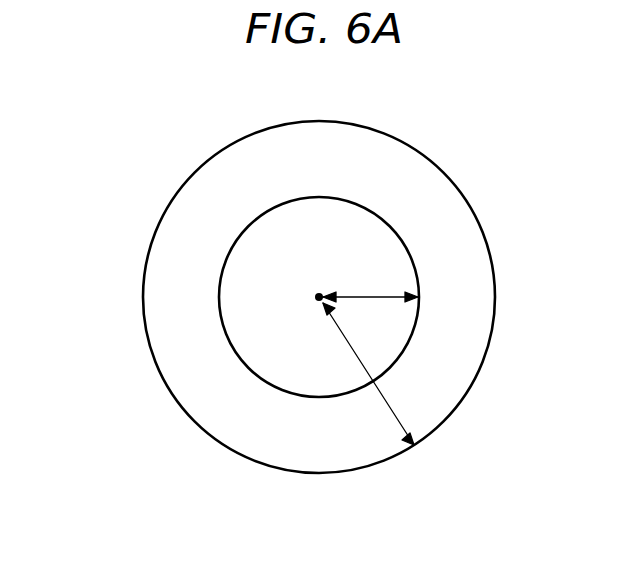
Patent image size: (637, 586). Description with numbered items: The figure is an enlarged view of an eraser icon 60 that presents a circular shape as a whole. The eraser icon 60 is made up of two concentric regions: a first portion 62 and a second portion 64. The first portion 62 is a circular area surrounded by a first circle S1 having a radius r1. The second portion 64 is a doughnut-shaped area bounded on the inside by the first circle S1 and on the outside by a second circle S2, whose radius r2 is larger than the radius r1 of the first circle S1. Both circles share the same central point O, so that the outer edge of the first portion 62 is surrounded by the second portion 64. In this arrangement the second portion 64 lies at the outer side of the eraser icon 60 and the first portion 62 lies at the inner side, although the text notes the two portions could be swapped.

The eraser icon 60 is at (112, 189).
The first portion 62 is at (265, 355).
The second portion 64 is at (201, 397).
The central point O is at (322, 292).
The radius of the first circle r1 is at (370, 284).
The radius of the second circle r2 is at (368, 374).
The first circle S1 is at (418, 288).
The second circle S2 is at (438, 431).